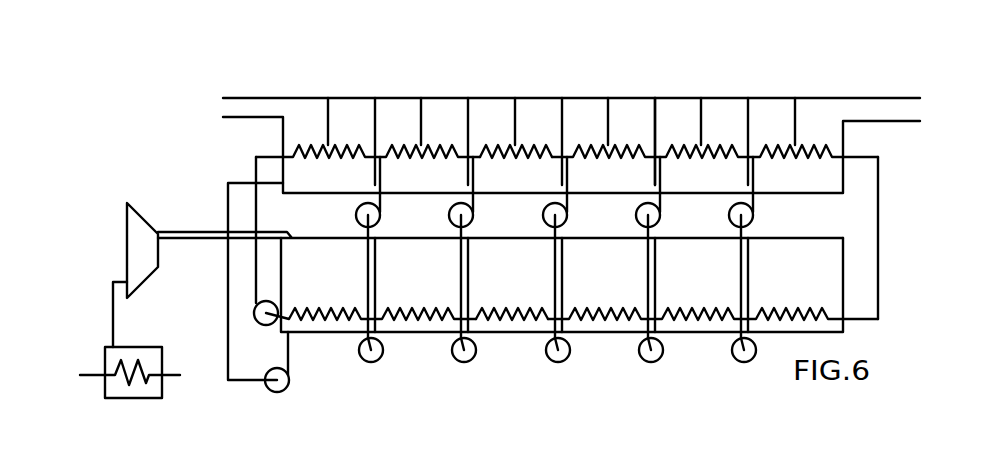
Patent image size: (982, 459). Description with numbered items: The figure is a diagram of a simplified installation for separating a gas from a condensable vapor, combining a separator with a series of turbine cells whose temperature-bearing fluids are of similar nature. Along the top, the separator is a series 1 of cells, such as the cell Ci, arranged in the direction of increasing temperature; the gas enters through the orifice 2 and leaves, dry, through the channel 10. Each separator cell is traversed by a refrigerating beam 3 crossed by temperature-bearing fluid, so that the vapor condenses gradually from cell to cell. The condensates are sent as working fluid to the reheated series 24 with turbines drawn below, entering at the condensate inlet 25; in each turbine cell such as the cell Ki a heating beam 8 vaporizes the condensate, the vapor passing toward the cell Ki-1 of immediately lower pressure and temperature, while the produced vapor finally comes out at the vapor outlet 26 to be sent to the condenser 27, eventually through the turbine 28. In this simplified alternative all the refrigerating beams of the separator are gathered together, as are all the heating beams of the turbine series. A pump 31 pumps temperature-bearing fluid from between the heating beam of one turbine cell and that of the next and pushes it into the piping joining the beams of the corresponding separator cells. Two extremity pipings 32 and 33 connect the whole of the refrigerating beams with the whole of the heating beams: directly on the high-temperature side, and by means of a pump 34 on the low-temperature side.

The series of cells 1 is at (646, 98).
The orifice 2 is at (889, 108).
The refrigerating beam 3 is at (538, 147).
The heating beam 8 is at (505, 322).
The channel 10 is at (245, 106).
The reheated series with turbines 24 is at (528, 334).
The condensate inlet 25 is at (290, 357).
The vapor outlet 26 is at (188, 231).
The condenser 27 is at (148, 399).
The turbine 28 is at (141, 214).
The pump 31 is at (566, 217).
The extremity piping 32 is at (880, 238).
The extremity piping 33 is at (253, 265).
The pump 34 is at (254, 313).
The separator cell Ci is at (503, 172).
The turbine cell Ki-1 is at (425, 278).
The turbine cell Ki is at (495, 272).